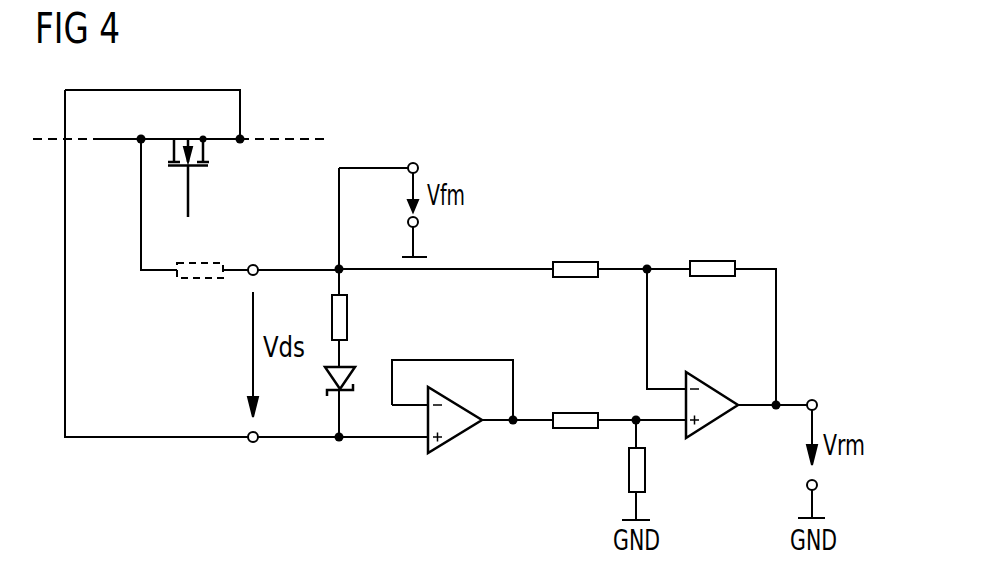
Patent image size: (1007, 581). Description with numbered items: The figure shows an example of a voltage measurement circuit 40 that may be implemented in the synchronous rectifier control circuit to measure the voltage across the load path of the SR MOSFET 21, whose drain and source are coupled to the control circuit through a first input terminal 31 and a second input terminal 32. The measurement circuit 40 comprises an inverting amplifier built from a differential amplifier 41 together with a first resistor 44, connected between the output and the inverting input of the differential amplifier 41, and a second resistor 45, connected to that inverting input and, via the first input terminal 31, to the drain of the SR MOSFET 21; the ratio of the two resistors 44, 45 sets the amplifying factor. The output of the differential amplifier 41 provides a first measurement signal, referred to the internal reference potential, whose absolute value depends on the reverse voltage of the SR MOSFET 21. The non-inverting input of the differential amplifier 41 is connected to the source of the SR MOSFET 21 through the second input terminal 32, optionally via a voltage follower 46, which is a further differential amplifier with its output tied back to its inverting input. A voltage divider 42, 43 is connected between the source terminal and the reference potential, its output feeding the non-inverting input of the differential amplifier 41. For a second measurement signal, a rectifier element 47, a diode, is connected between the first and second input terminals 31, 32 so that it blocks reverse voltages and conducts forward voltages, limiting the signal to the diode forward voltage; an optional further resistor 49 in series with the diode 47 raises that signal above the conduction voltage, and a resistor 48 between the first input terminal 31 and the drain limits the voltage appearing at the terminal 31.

The SR MOSFET 21 is at (194, 170).
The first input terminal 31 is at (254, 263).
The second input terminal 32 is at (253, 442).
The voltage measurement circuit 40 is at (685, 249).
The differential amplifier 41 is at (712, 423).
The voltage divider resistor 42 is at (575, 412).
The voltage divider resistor 43 is at (628, 472).
The first resistor 44 is at (712, 279).
The second resistor 45 is at (573, 260).
The voltage follower 46 is at (457, 440).
The rectifier element 47 is at (330, 387).
The resistor 48 is at (192, 280).
The further resistor 49 is at (350, 318).